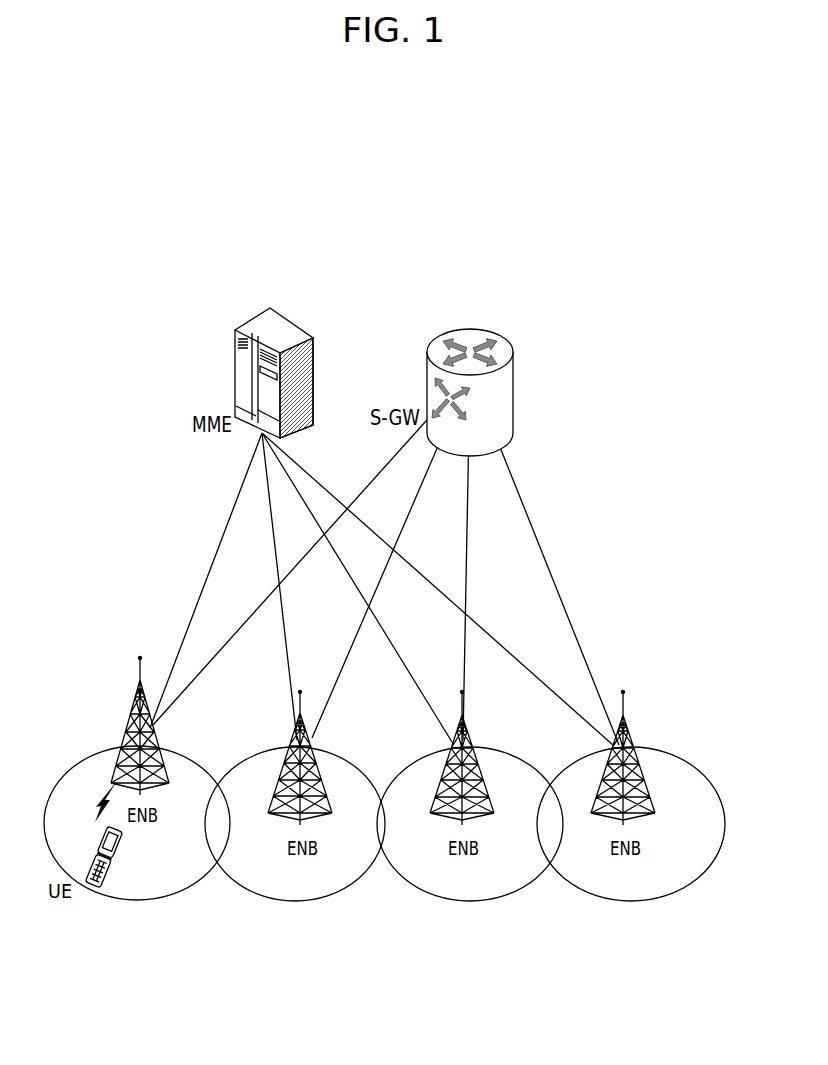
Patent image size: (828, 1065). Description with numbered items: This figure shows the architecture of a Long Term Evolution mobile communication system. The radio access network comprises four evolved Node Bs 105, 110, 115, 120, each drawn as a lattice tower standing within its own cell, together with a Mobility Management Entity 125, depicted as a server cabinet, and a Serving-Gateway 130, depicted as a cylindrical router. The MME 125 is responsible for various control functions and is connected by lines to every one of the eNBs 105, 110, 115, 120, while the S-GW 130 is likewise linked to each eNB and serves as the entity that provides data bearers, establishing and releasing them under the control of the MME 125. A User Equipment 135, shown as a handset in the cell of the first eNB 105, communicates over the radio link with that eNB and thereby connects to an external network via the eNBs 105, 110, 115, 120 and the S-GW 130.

The evolved Node B 105 is at (130, 708).
The evolved Node B 110 is at (295, 732).
The evolved Node B 115 is at (468, 732).
The evolved Node B 120 is at (630, 732).
The Mobility Management Entity 125 is at (262, 328).
The Serving-Gateway 130 is at (468, 332).
The User Equipment 135 is at (98, 855).